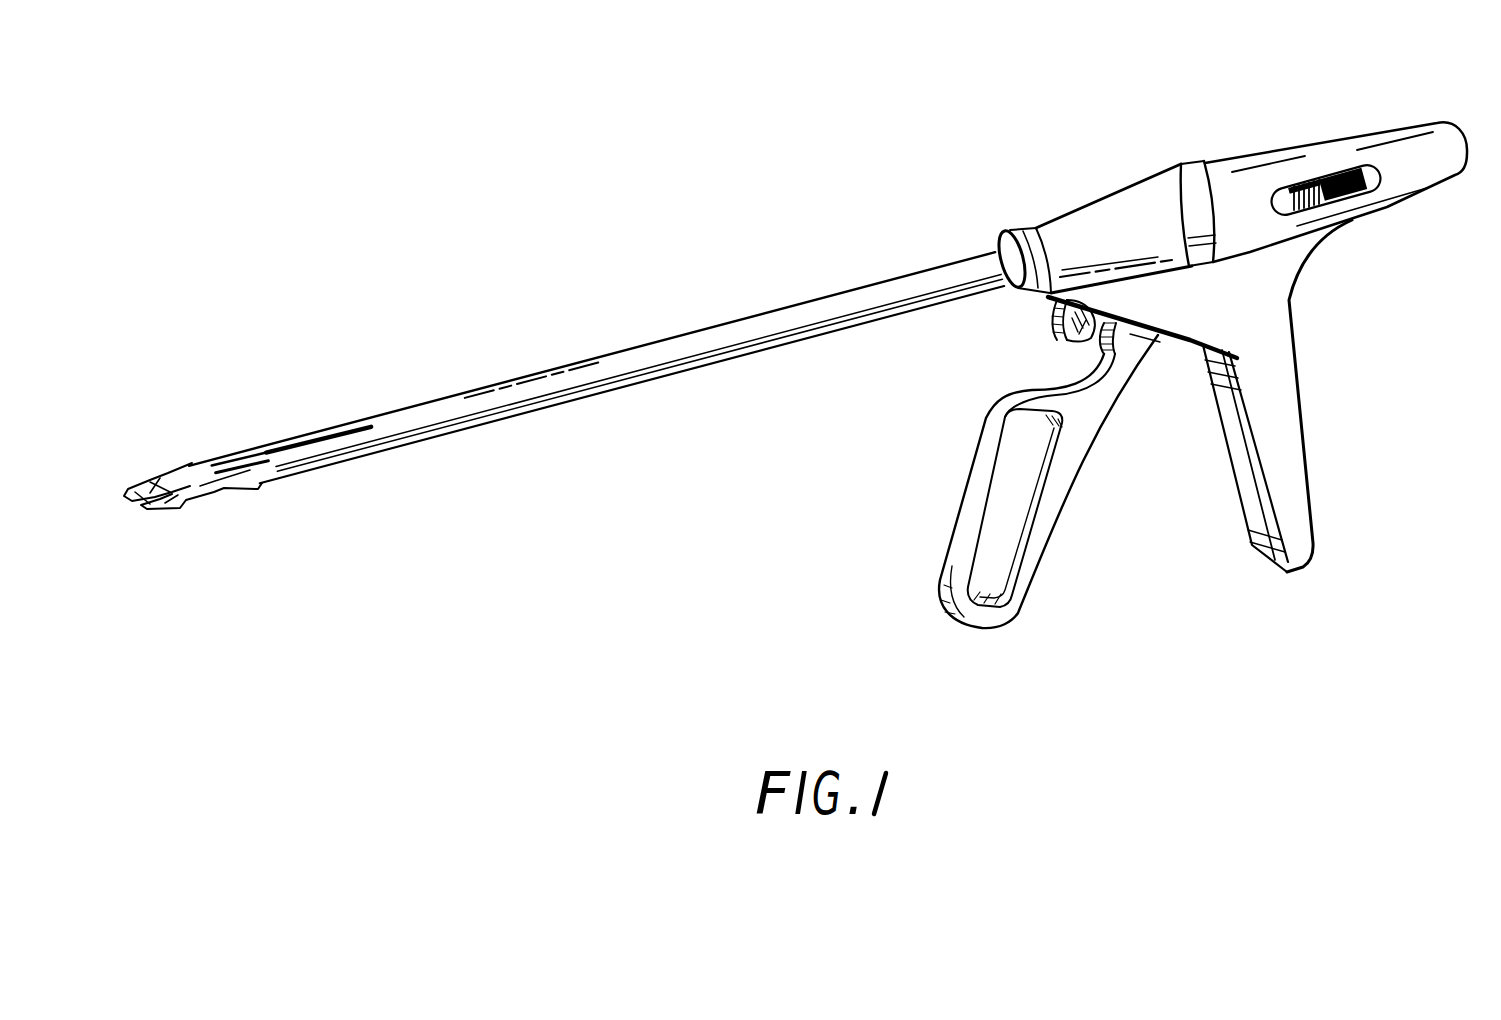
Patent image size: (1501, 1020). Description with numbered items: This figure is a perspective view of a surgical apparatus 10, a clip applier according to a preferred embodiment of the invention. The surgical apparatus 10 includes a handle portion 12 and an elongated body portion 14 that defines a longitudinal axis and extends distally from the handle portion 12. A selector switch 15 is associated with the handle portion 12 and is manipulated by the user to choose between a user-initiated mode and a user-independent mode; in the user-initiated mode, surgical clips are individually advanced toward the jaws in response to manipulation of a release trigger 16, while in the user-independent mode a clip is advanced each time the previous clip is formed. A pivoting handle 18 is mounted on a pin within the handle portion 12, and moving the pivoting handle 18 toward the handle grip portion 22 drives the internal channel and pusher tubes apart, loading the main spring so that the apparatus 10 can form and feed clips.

The surgical apparatus 10 is at (922, 202).
The handle portion 12 is at (1303, 150).
The elongated body portion 14 is at (700, 347).
The selector switch 15 is at (1372, 174).
The release trigger 16 is at (1053, 334).
The pivoting handle 18 is at (1077, 453).
The handle grip portion 22 is at (1289, 407).